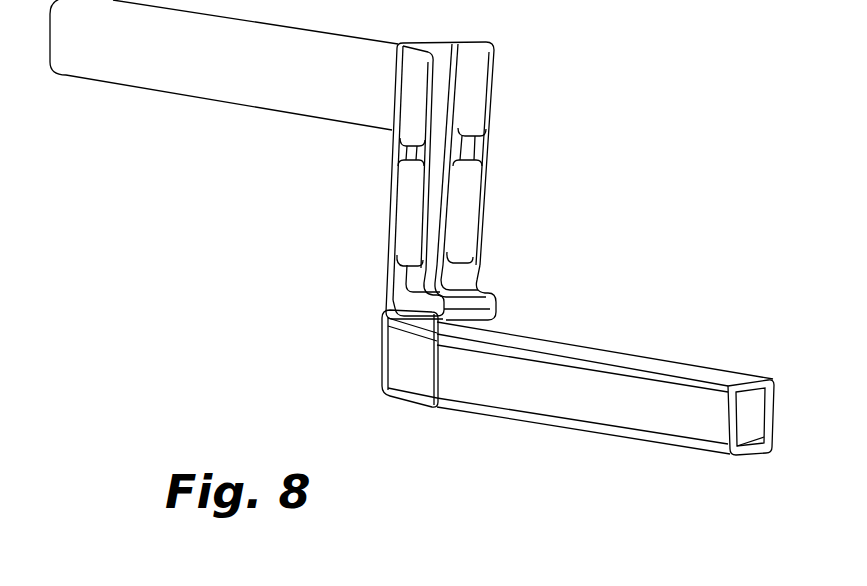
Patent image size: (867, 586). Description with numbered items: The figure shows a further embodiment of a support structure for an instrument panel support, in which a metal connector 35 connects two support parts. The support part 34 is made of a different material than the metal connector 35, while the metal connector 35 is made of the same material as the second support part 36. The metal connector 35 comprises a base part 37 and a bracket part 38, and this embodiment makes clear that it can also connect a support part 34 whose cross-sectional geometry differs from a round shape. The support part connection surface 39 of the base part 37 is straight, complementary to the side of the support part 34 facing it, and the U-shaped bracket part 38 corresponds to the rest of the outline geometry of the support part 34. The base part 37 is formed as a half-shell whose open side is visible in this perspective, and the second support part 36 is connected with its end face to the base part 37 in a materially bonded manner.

The support part 34 is at (578, 411).
The metal connector 35 is at (512, 213).
The second support part 36 is at (207, 72).
The base part 37 is at (396, 233).
The bracket part 38 is at (413, 403).
The support part connection surface 39 is at (478, 334).